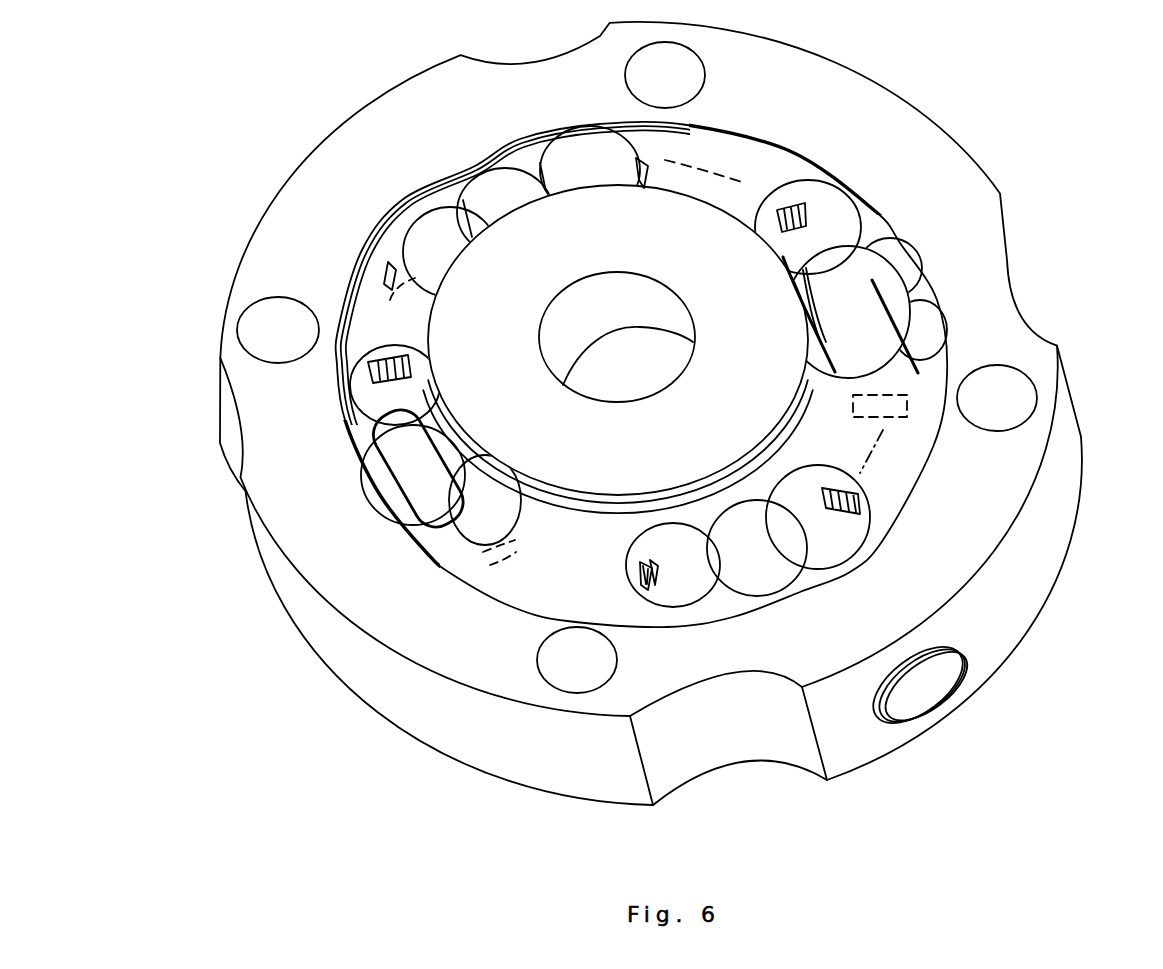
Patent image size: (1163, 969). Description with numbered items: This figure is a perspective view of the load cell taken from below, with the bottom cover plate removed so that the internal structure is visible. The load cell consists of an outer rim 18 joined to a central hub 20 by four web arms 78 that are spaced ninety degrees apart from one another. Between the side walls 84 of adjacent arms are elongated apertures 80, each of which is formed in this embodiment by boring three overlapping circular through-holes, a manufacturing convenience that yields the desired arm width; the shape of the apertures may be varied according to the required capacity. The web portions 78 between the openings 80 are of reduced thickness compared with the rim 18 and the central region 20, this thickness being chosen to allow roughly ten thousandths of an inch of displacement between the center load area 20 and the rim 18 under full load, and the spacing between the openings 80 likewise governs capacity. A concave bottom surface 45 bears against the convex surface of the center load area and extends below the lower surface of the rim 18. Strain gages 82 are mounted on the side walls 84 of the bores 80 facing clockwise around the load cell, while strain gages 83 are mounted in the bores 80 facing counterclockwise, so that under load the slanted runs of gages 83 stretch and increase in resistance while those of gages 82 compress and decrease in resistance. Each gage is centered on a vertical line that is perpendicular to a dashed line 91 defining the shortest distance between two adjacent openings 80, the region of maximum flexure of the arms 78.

The outer rim 18 is at (980, 505).
The hub 20 is at (463, 335).
The concave bottom surface 45 is at (430, 205).
The web arms 78 is at (390, 247).
The elongated apertures 80 is at (485, 258).
The strain gages 82 is at (370, 368).
The strain gages 83 is at (393, 277).
The side walls 84 is at (410, 392).
The line 91 is at (388, 313).